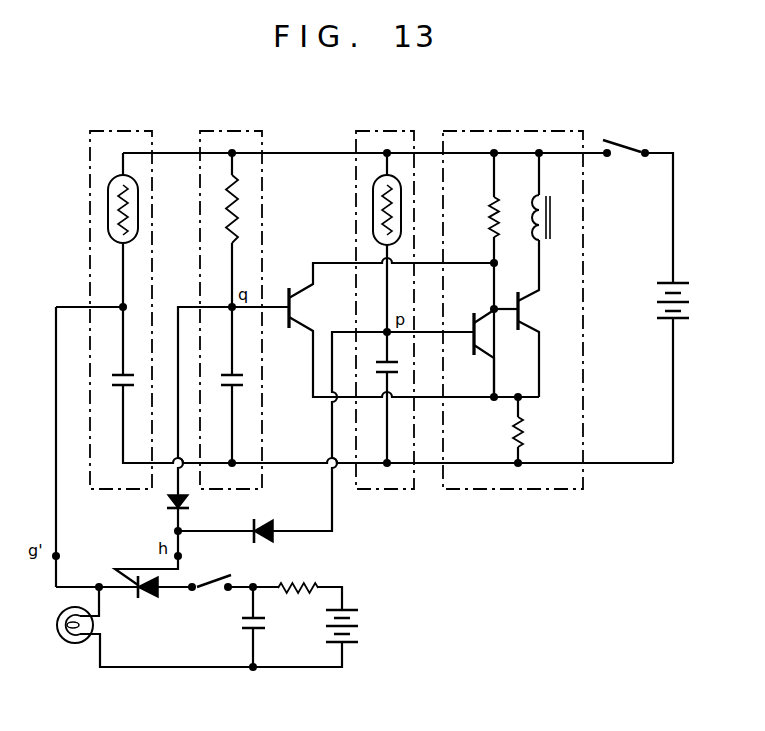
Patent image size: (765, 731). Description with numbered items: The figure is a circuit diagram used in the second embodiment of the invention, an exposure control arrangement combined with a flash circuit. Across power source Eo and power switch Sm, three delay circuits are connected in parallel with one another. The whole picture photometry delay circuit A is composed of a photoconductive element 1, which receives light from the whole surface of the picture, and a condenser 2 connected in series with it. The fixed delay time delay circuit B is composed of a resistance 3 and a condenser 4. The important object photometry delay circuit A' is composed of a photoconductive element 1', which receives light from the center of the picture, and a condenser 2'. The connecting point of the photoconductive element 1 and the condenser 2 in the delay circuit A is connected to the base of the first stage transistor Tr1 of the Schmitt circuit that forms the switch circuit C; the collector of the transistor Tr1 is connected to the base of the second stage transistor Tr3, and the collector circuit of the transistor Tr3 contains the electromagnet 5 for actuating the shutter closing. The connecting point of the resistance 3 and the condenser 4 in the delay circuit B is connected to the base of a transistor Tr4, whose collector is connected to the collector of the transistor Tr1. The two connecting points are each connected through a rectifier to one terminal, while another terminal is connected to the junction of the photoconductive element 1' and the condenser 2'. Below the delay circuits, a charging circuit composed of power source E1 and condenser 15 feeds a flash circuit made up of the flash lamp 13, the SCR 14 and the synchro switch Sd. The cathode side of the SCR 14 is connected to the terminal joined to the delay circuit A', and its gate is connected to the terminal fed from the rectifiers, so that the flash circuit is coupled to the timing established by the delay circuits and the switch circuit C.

The photoconductive element 1' is at (139, 209).
The photoconductive element 1 is at (365, 210).
The condenser 2' is at (127, 392).
The condenser 2 is at (392, 378).
The resistance 3 is at (240, 209).
The condenser 4 is at (236, 392).
The electromagnet 5 is at (549, 217).
The flash lamp 13 is at (72, 648).
The SCR 14 is at (135, 581).
The condenser 15 is at (261, 637).
The first stage transistor Tr1 is at (498, 336).
The second stage transistor Tr3 is at (540, 311).
The transistor Tr4 is at (313, 308).
The power switch Sm is at (628, 142).
The synchro switch Sd is at (209, 590).
The power source Eo is at (653, 300).
The power source E1 is at (356, 629).
The important object photometry delay circuit A' is at (121, 290).
The fixed delay time delay circuit B is at (236, 139).
The whole picture photometry delay circuit A is at (385, 290).
The switch circuit C is at (514, 139).